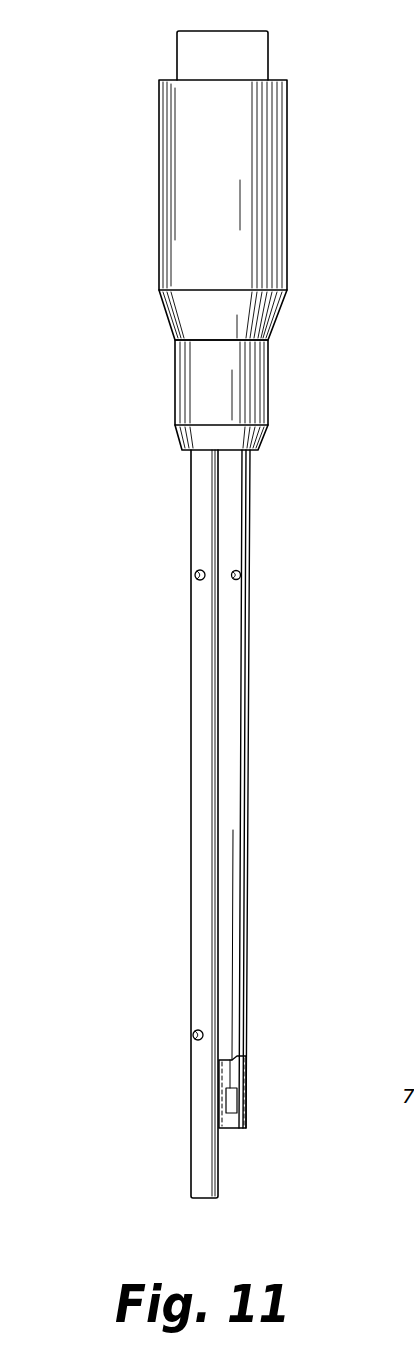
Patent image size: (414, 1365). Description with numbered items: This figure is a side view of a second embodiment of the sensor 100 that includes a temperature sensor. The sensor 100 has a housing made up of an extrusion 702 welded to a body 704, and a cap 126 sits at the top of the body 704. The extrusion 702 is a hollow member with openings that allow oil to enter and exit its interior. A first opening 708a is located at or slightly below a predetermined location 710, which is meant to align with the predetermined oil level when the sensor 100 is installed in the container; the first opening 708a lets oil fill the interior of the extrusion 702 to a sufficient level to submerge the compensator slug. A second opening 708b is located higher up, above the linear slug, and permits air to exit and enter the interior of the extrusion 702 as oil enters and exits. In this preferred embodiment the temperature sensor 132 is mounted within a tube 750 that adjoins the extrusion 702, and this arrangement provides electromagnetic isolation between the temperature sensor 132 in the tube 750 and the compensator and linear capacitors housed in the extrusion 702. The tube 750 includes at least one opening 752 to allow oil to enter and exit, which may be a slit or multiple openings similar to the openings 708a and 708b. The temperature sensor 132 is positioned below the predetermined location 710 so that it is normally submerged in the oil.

The sensor 100 is at (131, 129).
The end cap 126 is at (254, 46).
The body 704 is at (268, 200).
The extrusion 702 is at (191, 518).
The tube 750 is at (244, 492).
The second opening 708b is at (192, 575).
The first opening 708a is at (193, 1035).
The predetermined location 710 is at (257, 1023).
The opening 752 is at (236, 1142).
The temperature sensor 132 is at (240, 1100).